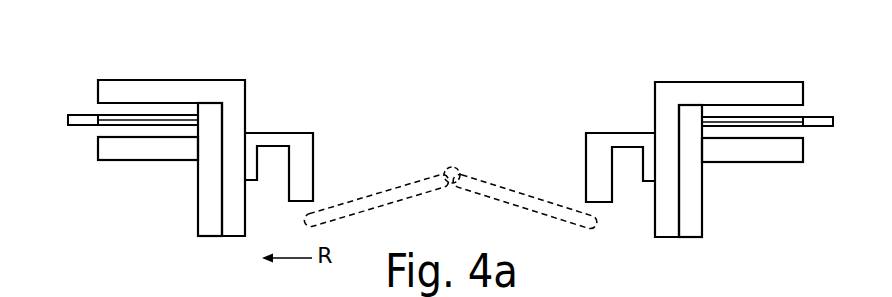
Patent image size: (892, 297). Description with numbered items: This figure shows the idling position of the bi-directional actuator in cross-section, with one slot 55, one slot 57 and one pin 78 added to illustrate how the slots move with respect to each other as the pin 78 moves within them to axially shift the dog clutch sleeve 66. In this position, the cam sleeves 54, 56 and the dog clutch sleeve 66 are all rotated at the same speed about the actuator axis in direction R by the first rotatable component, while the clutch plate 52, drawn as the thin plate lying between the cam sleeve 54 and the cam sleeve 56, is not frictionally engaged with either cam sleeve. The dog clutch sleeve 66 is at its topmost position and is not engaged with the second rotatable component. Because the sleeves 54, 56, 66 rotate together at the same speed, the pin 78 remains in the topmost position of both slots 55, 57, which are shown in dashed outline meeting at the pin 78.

The clutch plate 52 is at (78, 119).
The cam sleeve 54 is at (213, 85).
The cam sleeve 56 is at (152, 156).
The dog clutch sleeve 66 is at (306, 140).
The slot 57 is at (387, 189).
The slot 55 is at (507, 189).
The pin 78 is at (450, 170).